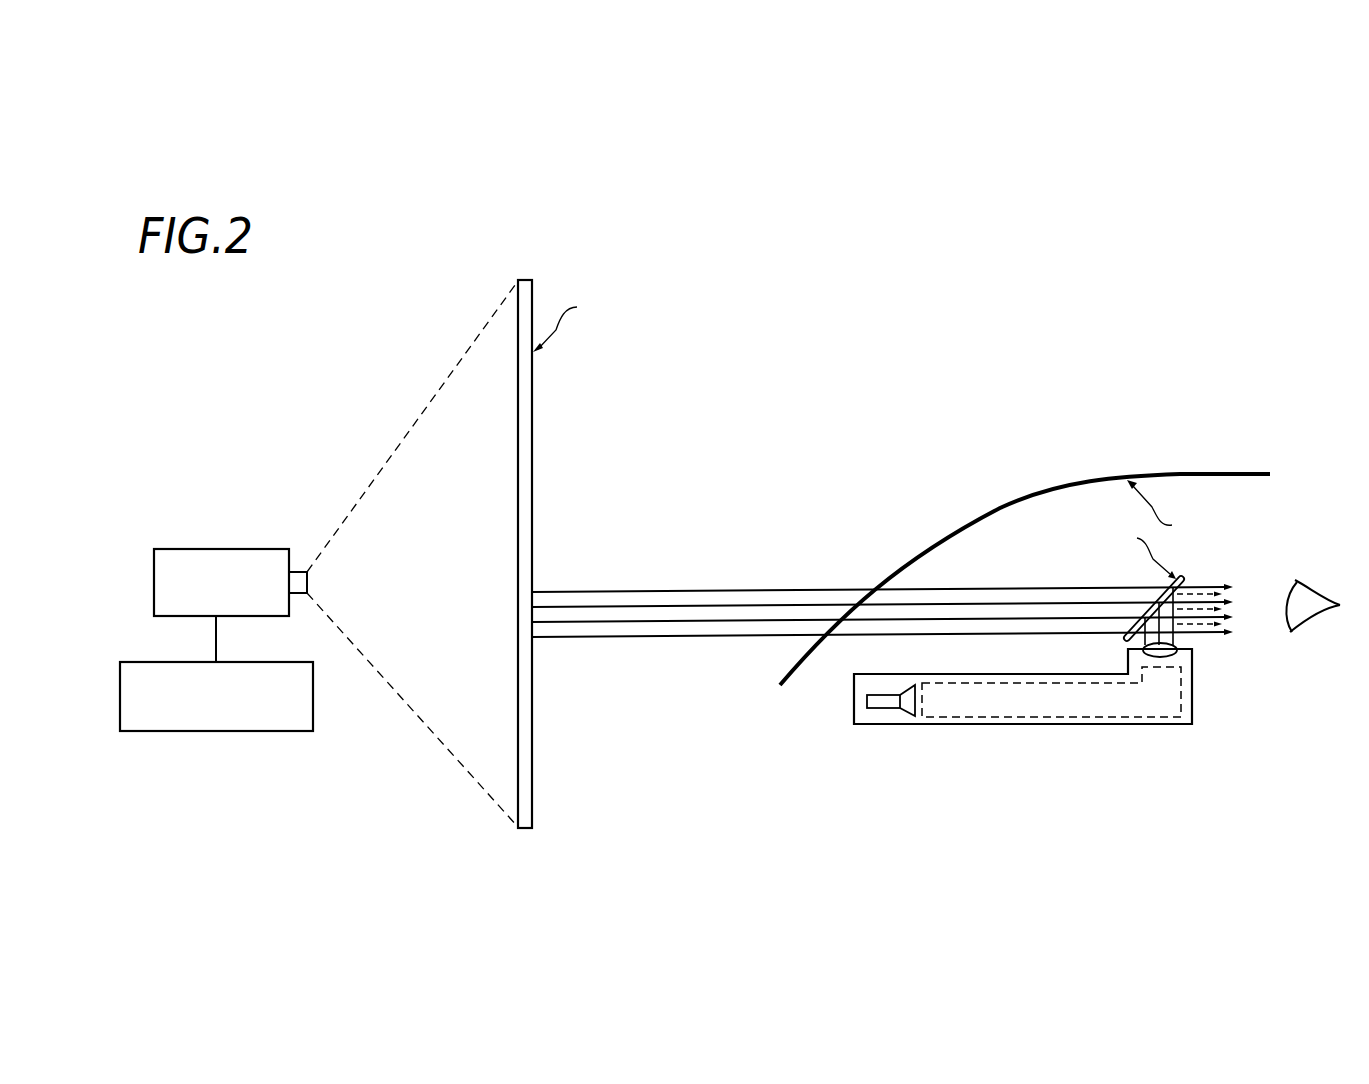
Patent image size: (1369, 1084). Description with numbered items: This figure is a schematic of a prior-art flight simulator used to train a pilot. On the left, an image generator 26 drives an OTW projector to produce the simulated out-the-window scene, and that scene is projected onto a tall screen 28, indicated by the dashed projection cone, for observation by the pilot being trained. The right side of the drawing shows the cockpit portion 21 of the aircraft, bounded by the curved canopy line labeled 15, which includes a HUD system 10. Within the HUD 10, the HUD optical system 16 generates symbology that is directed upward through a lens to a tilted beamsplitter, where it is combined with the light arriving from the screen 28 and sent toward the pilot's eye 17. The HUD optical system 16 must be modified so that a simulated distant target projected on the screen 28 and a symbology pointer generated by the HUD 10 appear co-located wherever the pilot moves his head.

The HUD system 10 is at (1113, 725).
The canopy 15 is at (1010, 500).
The HUD optical system 16 is at (930, 716).
The pilot's eye 17 is at (1303, 603).
The cockpit portion 21 is at (1050, 468).
The image generator 26 is at (273, 723).
The screen 28 is at (533, 512).